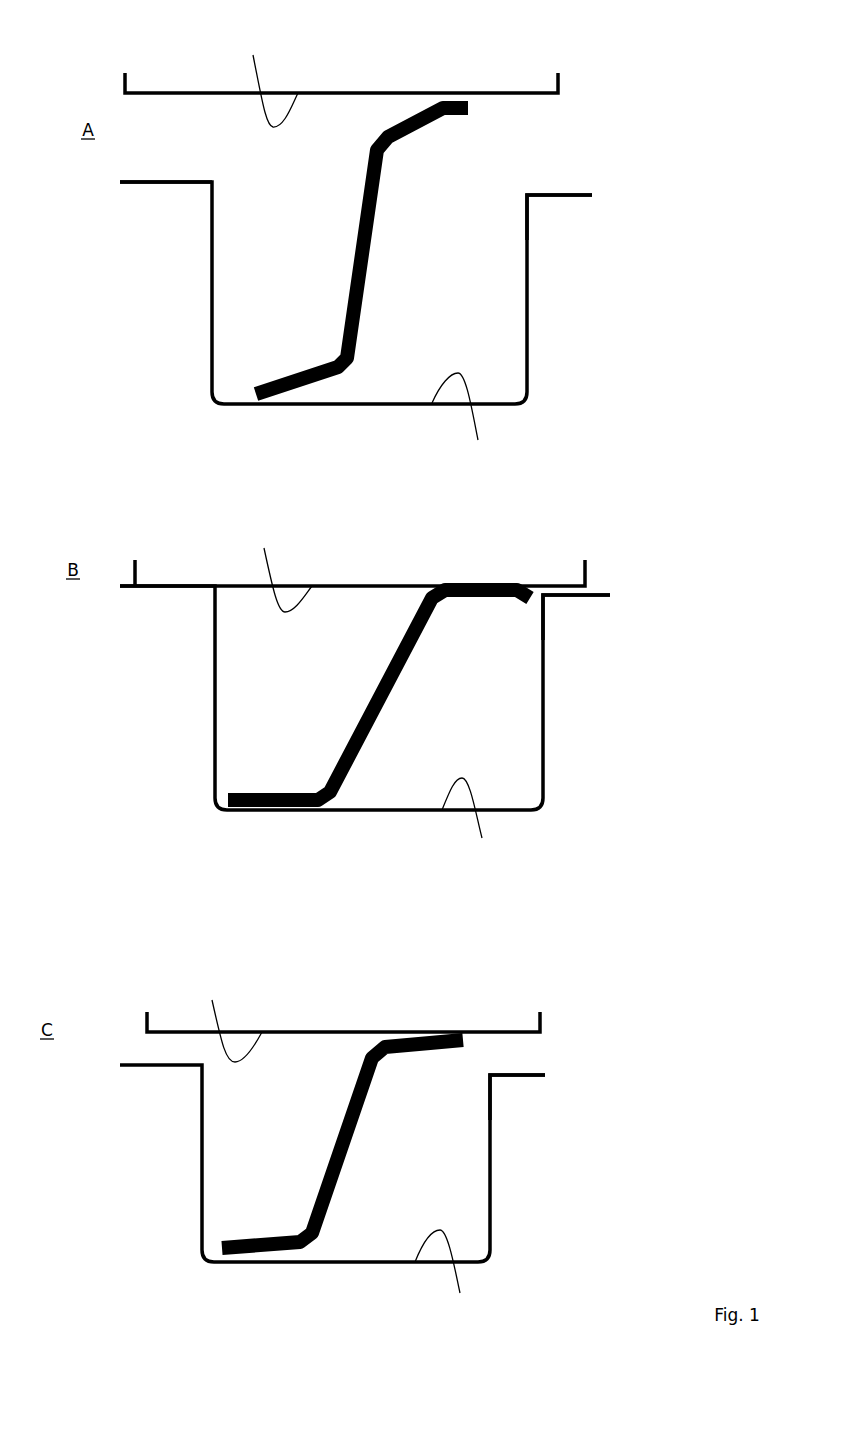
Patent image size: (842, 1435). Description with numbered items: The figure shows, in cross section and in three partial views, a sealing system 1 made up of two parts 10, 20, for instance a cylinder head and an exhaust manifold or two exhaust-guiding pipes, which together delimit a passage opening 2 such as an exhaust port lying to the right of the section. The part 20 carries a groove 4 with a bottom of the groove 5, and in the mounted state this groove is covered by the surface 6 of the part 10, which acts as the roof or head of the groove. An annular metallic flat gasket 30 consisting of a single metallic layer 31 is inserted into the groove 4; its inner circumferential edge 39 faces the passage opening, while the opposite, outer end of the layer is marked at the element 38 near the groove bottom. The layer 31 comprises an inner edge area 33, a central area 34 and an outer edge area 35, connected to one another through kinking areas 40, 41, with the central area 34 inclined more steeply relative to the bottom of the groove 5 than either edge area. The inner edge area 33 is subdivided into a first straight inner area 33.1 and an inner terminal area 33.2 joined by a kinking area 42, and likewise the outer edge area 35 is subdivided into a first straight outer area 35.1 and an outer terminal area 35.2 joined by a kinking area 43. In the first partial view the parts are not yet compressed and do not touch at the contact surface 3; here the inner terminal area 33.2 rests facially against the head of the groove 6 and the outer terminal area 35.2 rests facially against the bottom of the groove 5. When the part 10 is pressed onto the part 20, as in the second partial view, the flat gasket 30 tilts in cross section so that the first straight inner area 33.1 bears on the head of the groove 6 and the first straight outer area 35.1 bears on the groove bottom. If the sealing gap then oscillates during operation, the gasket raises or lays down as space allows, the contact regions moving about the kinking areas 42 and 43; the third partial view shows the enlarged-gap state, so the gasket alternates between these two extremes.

The sealing system 1 is at (172, 352).
The passage opening 2 is at (708, 139).
The contact surface 3 is at (177, 180).
The groove 4 is at (497, 303).
The bottom of the groove 5 is at (451, 844).
The surface of part 10 6 is at (260, 548).
The part 10 is at (351, 77).
The part 20 is at (139, 264).
The flat gasket 30 is at (363, 175).
The metallic layer 31 is at (362, 205).
The inner edge area 33 is at (418, 130).
The first straight inner area 33.1 is at (405, 112).
The inner terminal area 33.2 is at (467, 117).
The central area 34 is at (373, 235).
The outer edge area 35 is at (287, 378).
The first straight outer area 35.1 is at (320, 365).
The outer terminal area 35.2 is at (255, 400).
The lower spring end 38 is at (256, 394).
The inner circumferential edge 39 is at (470, 109).
The kinking area 40 is at (368, 138).
The kinking area 41 is at (348, 368).
The kinking area 42 is at (446, 100).
The kinking area 43 is at (280, 403).